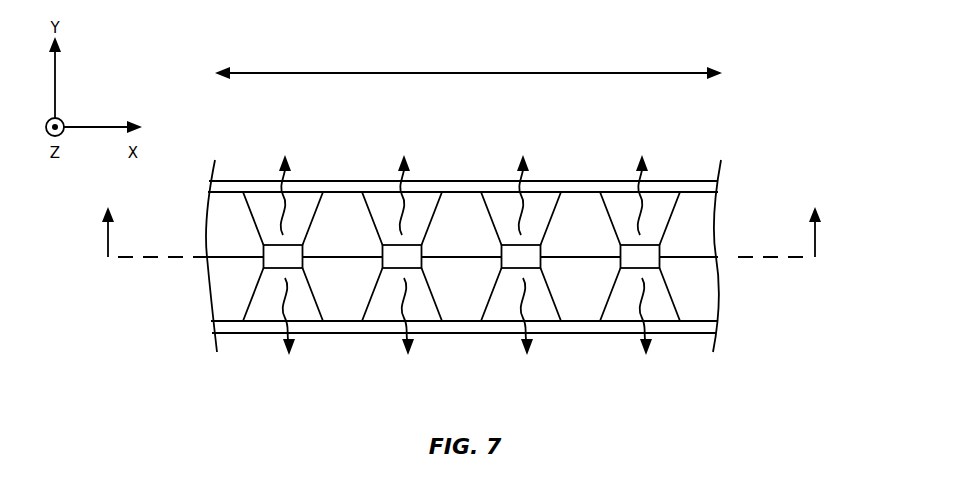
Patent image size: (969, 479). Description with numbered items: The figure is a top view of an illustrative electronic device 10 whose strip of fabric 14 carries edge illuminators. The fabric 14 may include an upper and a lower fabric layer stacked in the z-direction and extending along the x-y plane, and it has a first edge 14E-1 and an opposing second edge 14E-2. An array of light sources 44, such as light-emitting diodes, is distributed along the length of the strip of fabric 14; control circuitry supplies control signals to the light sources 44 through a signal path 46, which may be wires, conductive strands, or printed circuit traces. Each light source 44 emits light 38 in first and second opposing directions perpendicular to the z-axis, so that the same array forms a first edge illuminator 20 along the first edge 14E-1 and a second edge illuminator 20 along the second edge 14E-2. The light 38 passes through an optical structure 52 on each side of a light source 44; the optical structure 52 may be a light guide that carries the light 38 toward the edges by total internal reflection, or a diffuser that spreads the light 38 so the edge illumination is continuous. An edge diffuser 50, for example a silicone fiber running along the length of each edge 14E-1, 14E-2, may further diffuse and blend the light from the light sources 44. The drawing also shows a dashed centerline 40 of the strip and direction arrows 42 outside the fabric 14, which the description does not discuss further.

The electronic device 10 is at (668, 50).
The fabric 14 is at (460, 181).
The first edge 14E-1 is at (614, 183).
The second edge 14E-2 is at (463, 325).
The edge illuminator 20 is at (370, 162).
The light 38 is at (403, 218).
The central axis 40 is at (153, 259).
The normal direction 42 is at (108, 235).
The light sources 44 is at (290, 254).
The signal path 46 is at (580, 257).
The edge diffuser 50 is at (688, 181).
The optical structure 52 is at (255, 200).